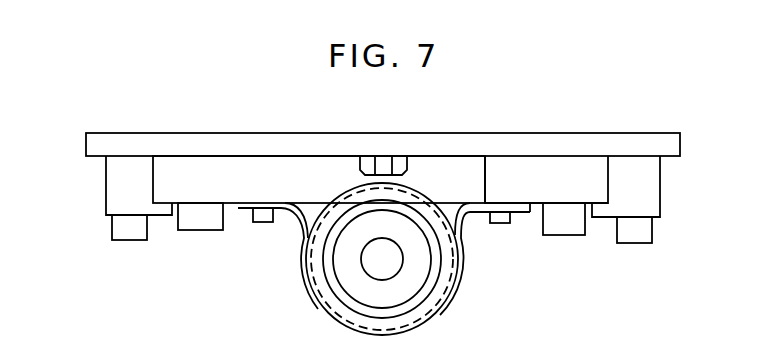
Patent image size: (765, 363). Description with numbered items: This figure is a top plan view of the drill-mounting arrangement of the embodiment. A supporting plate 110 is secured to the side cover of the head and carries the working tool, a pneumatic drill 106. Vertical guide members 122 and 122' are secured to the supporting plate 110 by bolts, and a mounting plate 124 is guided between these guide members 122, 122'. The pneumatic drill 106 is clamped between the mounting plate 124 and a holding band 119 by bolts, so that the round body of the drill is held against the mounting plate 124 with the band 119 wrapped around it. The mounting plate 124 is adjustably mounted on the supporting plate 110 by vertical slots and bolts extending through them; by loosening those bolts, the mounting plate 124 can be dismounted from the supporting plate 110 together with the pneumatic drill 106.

The supporting plate 110 is at (561, 133).
The vertical guide member 122' is at (112, 213).
The mounting plate 124 is at (536, 192).
The vertical guide member 122 is at (653, 215).
The holding band 119 is at (297, 218).
The pneumatic drill 106 is at (417, 287).